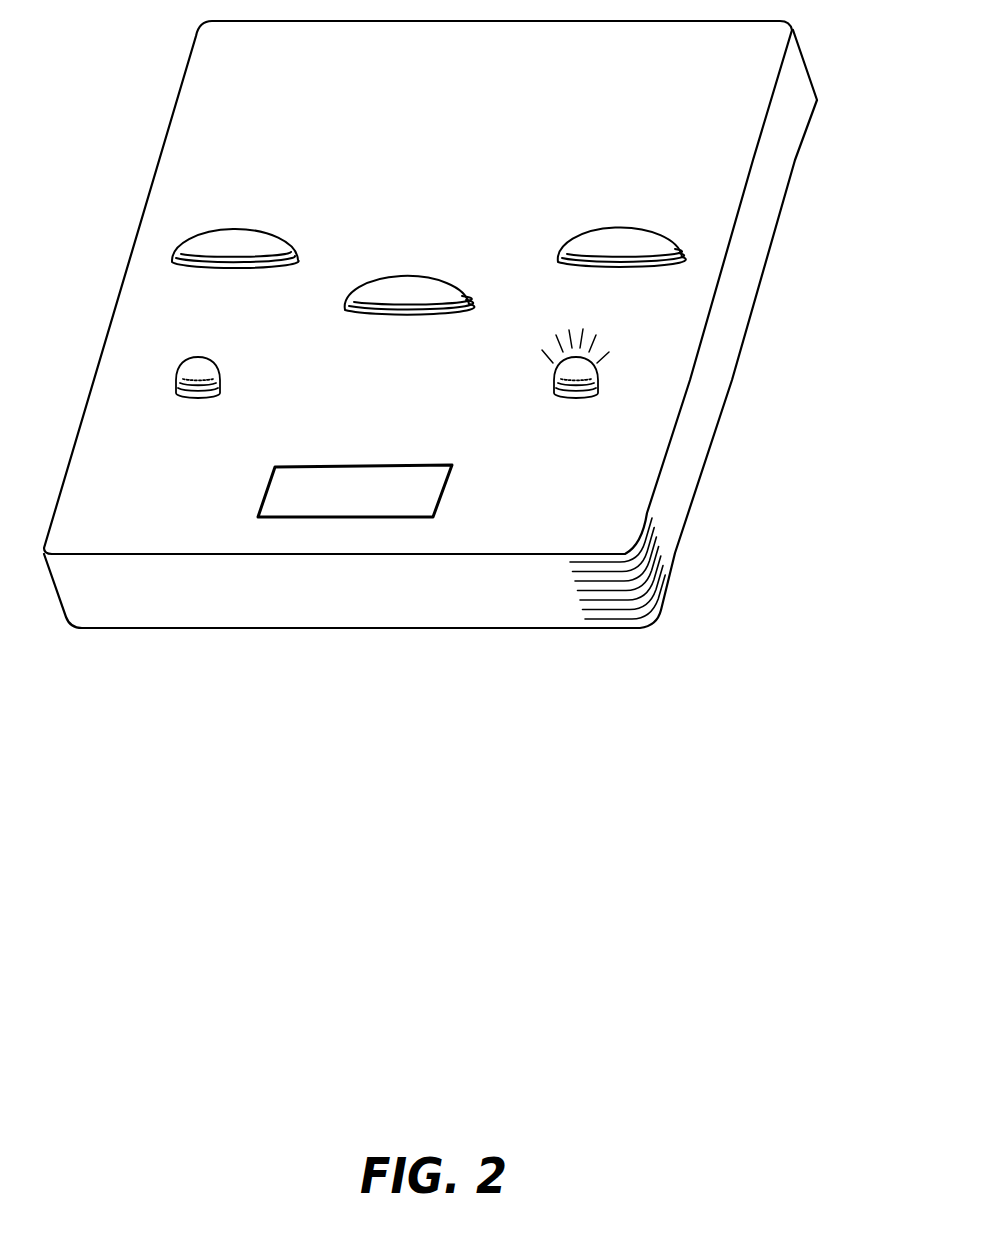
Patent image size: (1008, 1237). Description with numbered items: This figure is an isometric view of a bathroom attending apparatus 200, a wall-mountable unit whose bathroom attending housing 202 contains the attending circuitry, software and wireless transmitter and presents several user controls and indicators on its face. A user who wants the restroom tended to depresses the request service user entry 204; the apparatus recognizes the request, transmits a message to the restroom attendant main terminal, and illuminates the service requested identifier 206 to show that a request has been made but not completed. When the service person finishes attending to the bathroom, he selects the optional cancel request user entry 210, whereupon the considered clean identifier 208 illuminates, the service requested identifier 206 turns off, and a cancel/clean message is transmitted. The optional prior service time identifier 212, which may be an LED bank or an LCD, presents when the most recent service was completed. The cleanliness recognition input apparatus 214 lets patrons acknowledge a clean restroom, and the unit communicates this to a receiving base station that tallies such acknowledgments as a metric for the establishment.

The bathroom attending apparatus 200 is at (136, 695).
The bathroom attending housing 202 is at (712, 190).
The request service user entry 204 is at (235, 245).
The service requested identifier 206 is at (200, 363).
The considered clean identifier 208 is at (577, 362).
The cancel request user entry 210 is at (622, 240).
The prior service time identifier 212 is at (425, 492).
The cleanliness recognition input apparatus 214 is at (408, 292).